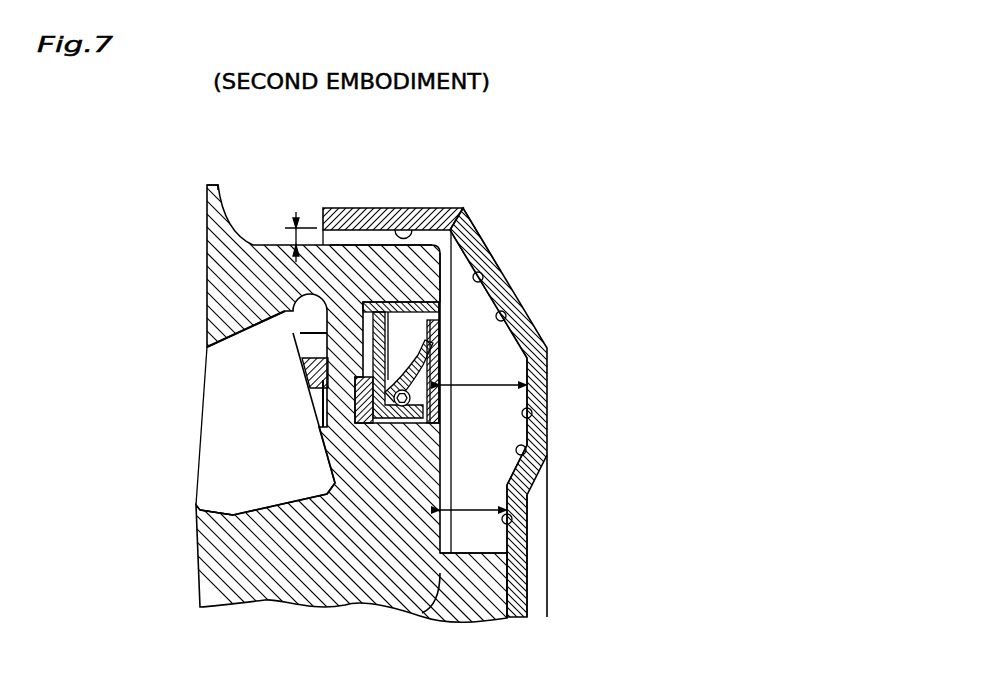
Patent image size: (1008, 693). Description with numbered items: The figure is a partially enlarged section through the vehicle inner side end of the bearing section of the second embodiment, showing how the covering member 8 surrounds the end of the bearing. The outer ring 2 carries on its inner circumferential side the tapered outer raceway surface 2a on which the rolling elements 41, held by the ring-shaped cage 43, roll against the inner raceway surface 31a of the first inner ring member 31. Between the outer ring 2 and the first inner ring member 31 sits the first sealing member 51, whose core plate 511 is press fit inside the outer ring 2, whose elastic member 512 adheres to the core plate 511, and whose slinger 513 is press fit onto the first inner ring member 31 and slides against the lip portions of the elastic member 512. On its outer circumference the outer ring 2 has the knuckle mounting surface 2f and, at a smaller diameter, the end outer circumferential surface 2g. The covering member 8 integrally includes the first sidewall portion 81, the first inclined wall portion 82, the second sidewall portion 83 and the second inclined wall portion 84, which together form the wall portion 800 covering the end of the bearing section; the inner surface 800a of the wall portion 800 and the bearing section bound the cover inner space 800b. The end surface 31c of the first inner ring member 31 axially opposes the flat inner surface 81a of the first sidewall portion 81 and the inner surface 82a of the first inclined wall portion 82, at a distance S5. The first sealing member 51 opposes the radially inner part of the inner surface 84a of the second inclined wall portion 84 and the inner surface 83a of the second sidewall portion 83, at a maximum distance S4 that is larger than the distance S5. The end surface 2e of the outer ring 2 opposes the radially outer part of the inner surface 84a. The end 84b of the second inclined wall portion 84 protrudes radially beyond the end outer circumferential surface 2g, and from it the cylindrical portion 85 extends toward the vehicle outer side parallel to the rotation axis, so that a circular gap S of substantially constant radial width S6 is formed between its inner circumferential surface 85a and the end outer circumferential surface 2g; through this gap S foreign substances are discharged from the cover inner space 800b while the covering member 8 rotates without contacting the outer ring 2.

The outer ring 2 is at (232, 270).
The outer raceway surface 2a is at (207, 347).
The end surface 2e is at (438, 268).
The knuckle mounting surface 2f is at (207, 190).
The end outer circumferential surface 2g is at (381, 241).
The covering member 8 is at (530, 601).
The first inner ring member 31 is at (226, 578).
The inner raceway surface 31a is at (210, 512).
The end surface 31c is at (441, 531).
The rolling elements 41 is at (232, 440).
The cage 43 is at (302, 378).
The first sealing member 51 is at (283, 477).
The core plate 511 is at (345, 430).
The elastic member 512 is at (378, 420).
The slinger 513 is at (410, 418).
The first sidewall portion 81 is at (518, 512).
The inner surface 81a is at (509, 521).
The first inclined wall portion 82 is at (538, 447).
The inner surface 82a is at (522, 452).
The second sidewall portion 83 is at (538, 385).
The inner surface 83a is at (530, 416).
The second inclined wall portion 84 is at (533, 344).
The inner surface 84a is at (505, 316).
The end 84b is at (464, 224).
The cylindrical portion 85 is at (363, 220).
The inner circumferential surface 85a is at (413, 234).
The wall portion 800 is at (494, 414).
The inner surface 800a is at (482, 277).
The cover inner space 800b is at (508, 441).
The gap S is at (345, 240).
The distance S4 is at (483, 373).
The distance S5 is at (473, 498).
The distance S6 is at (293, 224).